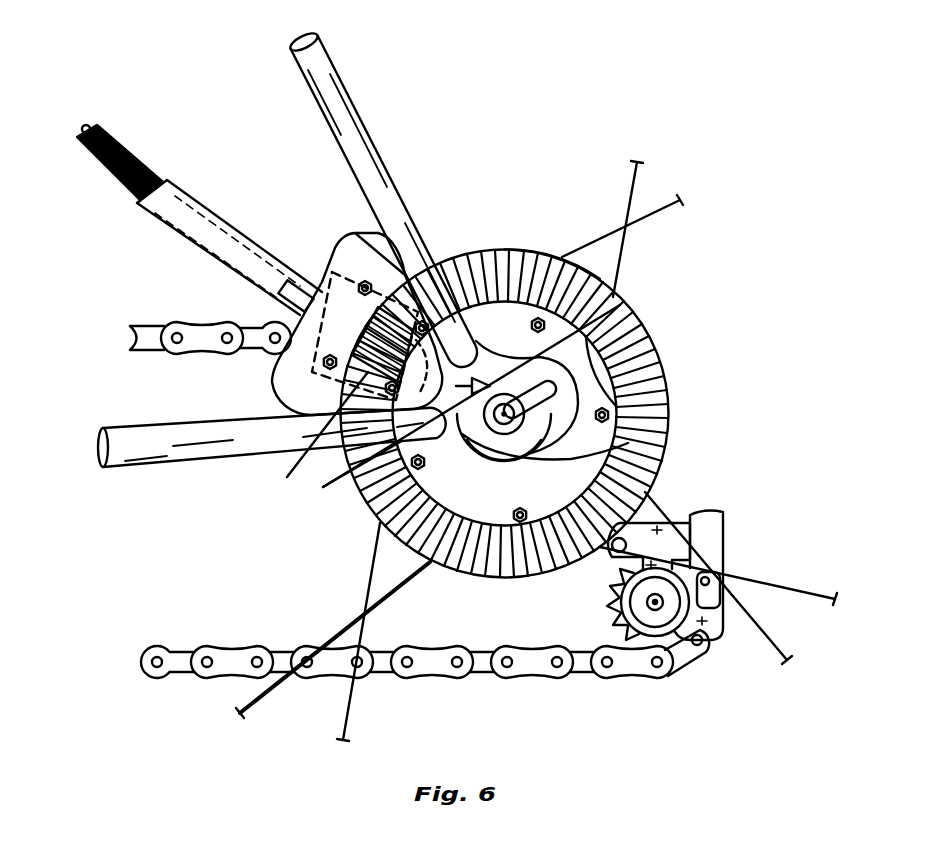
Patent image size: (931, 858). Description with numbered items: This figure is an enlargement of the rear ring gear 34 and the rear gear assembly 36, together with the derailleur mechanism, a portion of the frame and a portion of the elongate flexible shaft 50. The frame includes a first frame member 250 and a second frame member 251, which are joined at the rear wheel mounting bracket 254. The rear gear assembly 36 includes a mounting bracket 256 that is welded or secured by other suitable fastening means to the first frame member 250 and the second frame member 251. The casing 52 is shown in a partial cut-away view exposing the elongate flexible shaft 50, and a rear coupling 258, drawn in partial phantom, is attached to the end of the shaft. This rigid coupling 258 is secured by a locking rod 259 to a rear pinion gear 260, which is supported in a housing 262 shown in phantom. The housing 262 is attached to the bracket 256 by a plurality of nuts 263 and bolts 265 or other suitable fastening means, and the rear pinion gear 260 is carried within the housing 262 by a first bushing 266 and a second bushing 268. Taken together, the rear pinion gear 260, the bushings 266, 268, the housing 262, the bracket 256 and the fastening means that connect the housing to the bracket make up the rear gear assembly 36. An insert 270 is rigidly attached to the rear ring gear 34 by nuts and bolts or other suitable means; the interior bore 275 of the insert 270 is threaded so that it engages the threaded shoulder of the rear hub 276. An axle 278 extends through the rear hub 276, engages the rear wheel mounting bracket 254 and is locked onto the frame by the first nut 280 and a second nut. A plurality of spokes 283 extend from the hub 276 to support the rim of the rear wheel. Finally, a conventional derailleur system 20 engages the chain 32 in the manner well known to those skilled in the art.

The derailleur system 20 is at (657, 640).
The chain 32 is at (137, 332).
The rear ring gear 34 is at (667, 361).
The rear gear assembly 36 is at (427, 247).
The elongate flexible shaft 50 is at (93, 153).
The casing 52 is at (170, 217).
The first frame member 250 is at (317, 68).
The second frame member 251 is at (148, 443).
The rear wheel mounting bracket 254 is at (625, 304).
The mounting bracket 256 is at (303, 394).
The rear coupling 258 is at (335, 285).
The locking rod 259 is at (283, 309).
The rear pinion gear 260 is at (304, 430).
The housing 262 is at (398, 233).
The nuts 263 is at (300, 348).
The bolts 265 is at (506, 256).
The first bushing 266 is at (338, 298).
The second bushing 268 is at (344, 479).
The insert 270 is at (665, 441).
The interior bore 275 is at (515, 450).
The rear hub 276 is at (623, 460).
The axle 278 is at (503, 425).
The first nut 280 is at (478, 432).
The spokes 283 is at (787, 578).